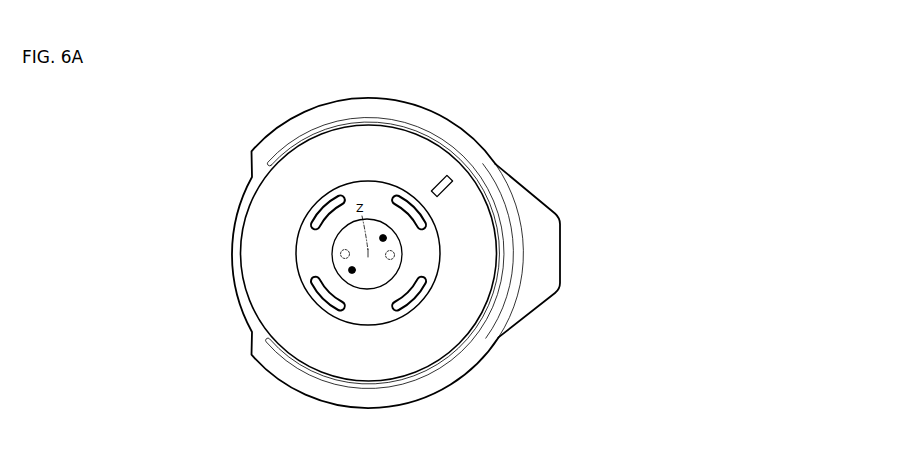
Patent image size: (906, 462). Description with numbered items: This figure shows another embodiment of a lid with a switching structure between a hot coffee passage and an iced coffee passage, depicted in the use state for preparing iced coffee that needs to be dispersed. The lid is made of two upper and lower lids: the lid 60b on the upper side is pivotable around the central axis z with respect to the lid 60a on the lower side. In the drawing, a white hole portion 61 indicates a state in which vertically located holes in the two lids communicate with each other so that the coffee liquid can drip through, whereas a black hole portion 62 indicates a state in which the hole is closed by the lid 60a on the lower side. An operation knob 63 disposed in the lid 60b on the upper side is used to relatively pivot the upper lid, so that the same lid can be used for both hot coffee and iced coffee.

The lid on the lower side 60a is at (518, 262).
The lid on the upper side 60b is at (463, 307).
The white hole portion 61 is at (412, 192).
The black hole portion 62 is at (388, 238).
The operation knob 63 is at (449, 187).